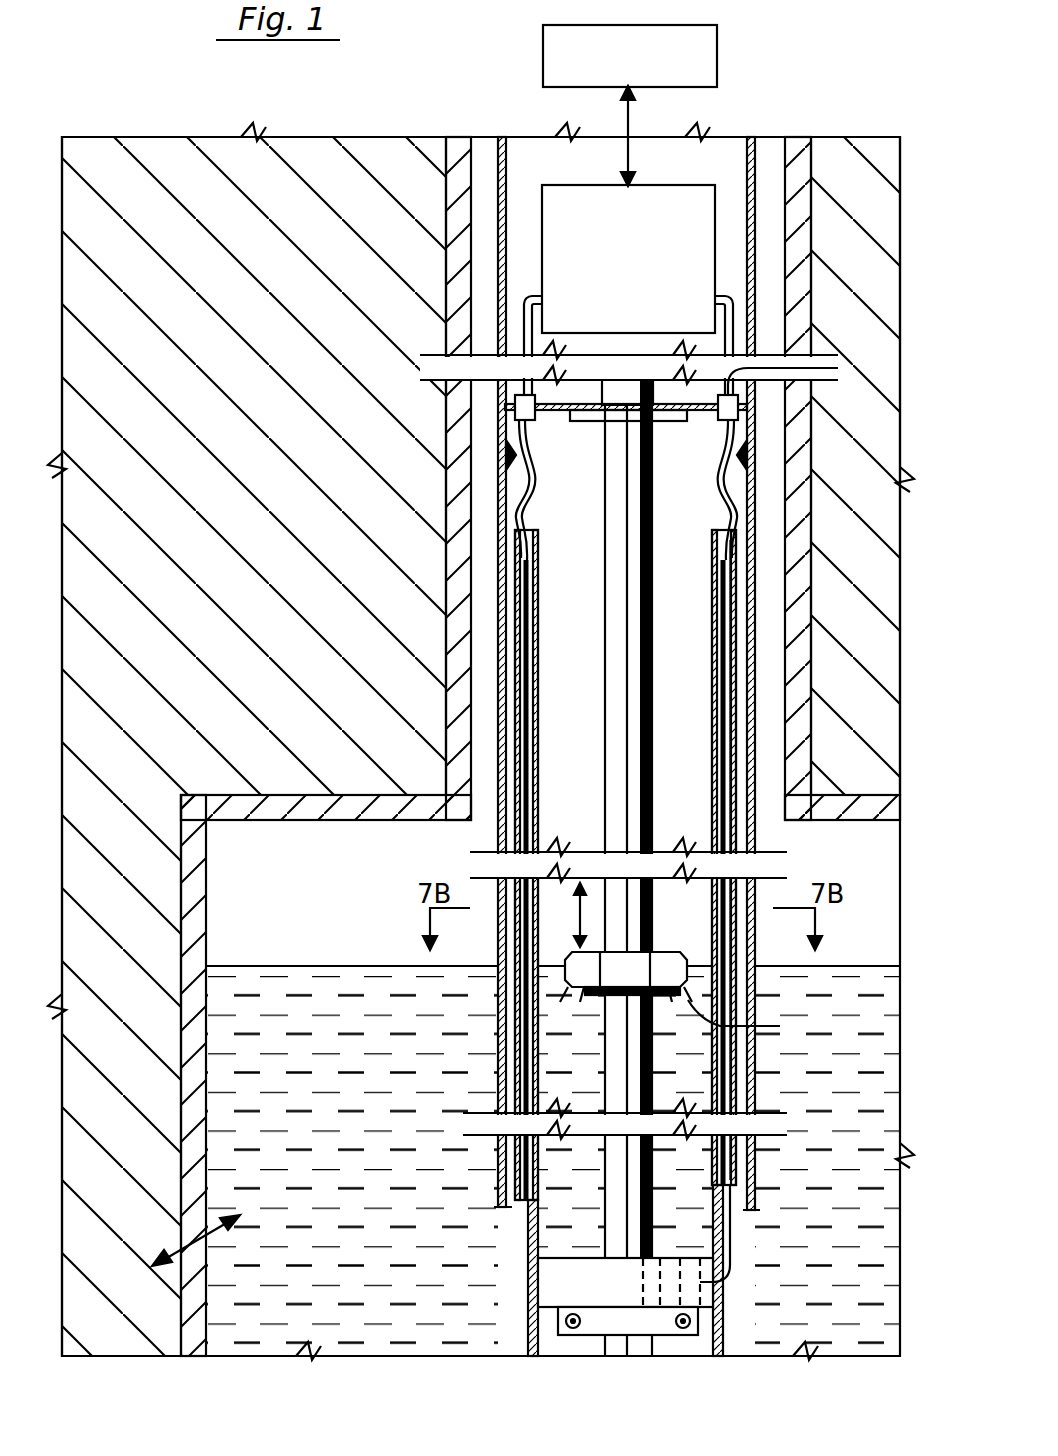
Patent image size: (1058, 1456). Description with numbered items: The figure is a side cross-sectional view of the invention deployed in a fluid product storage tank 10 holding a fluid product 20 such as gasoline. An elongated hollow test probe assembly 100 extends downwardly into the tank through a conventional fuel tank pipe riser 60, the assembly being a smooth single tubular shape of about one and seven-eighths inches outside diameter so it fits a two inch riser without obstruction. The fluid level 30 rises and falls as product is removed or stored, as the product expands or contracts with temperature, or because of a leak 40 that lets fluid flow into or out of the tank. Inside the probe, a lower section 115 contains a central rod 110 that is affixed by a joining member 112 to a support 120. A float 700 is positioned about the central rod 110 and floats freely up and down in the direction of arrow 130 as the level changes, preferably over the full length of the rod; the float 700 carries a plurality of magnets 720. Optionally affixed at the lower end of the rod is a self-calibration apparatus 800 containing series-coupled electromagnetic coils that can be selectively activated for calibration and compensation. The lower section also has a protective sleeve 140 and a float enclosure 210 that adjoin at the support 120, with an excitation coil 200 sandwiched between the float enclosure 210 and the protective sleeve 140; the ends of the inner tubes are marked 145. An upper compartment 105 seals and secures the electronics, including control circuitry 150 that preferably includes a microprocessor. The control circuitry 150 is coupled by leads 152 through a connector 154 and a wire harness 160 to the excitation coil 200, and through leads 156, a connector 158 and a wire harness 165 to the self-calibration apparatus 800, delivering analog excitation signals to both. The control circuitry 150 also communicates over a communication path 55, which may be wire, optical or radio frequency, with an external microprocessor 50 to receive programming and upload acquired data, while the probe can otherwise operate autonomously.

The fluid product storage tank 10 is at (248, 772).
The fluid product 20 is at (372, 1090).
The fluid level 30 is at (292, 963).
The leak 40 is at (168, 1256).
The external microprocessor 50 is at (717, 60).
The communication path 55 is at (628, 122).
The fuel tank pipe riser 60 is at (452, 706).
The test probe assembly 100 is at (498, 222).
The upper compartment 105 is at (562, 180).
The central rod 110 is at (646, 740).
The joining member 112 is at (614, 430).
The lower section 115 is at (596, 656).
The support 120 is at (515, 399).
The arrow 130 is at (568, 922).
The protective sleeve 140 is at (498, 530).
The pipe end 145 is at (505, 1215).
The control circuitry 150 is at (690, 185).
The leads 152 is at (522, 323).
The connector 154 is at (504, 448).
The leads 156 is at (735, 318).
The connector 158 is at (809, 375).
The wire harness 160 is at (530, 430).
The wire harness 165 is at (724, 430).
The excitation coil 200 is at (520, 597).
The float enclosure 210 is at (540, 580).
The float 700 is at (668, 950).
The magnets 720 is at (760, 1020).
The self-calibration apparatus 800 is at (553, 1285).